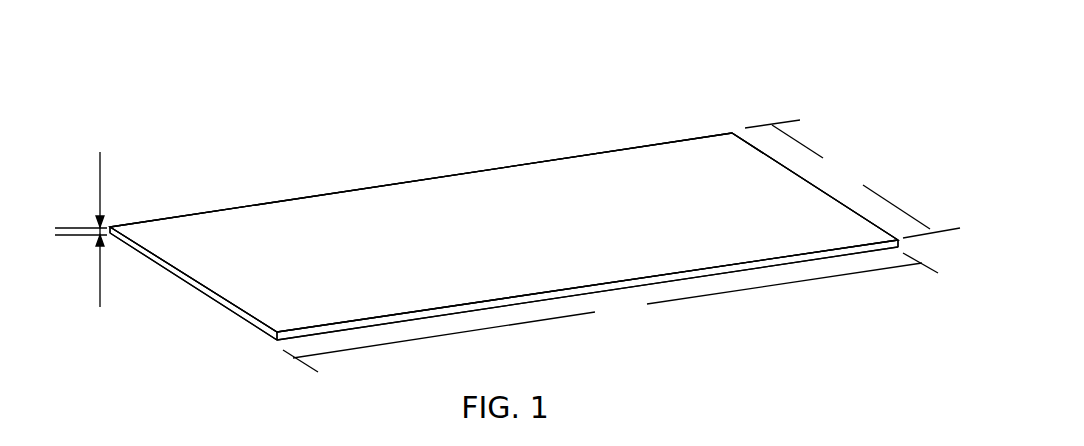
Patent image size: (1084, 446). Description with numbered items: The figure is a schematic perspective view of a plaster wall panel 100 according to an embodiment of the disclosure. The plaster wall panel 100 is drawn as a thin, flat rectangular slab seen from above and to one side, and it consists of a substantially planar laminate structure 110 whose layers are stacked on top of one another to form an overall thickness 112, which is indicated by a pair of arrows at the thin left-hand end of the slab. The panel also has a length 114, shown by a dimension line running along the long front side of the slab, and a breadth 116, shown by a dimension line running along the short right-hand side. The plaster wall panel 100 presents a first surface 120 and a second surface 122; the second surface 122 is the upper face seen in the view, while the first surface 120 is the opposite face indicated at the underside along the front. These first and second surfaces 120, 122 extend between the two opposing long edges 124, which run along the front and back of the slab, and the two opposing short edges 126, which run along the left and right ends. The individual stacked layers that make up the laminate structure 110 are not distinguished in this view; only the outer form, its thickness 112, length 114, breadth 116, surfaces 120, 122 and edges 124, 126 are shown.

The plaster wall panel 100 is at (239, 79).
The laminate structure 110 is at (147, 288).
The overall thickness 112 is at (74, 229).
The length 114 is at (610, 312).
The breadth 116 is at (852, 179).
The first surface 120 is at (234, 332).
The second surface 122 is at (495, 190).
The long edges 124 is at (590, 150).
The short edges 126 is at (202, 283).